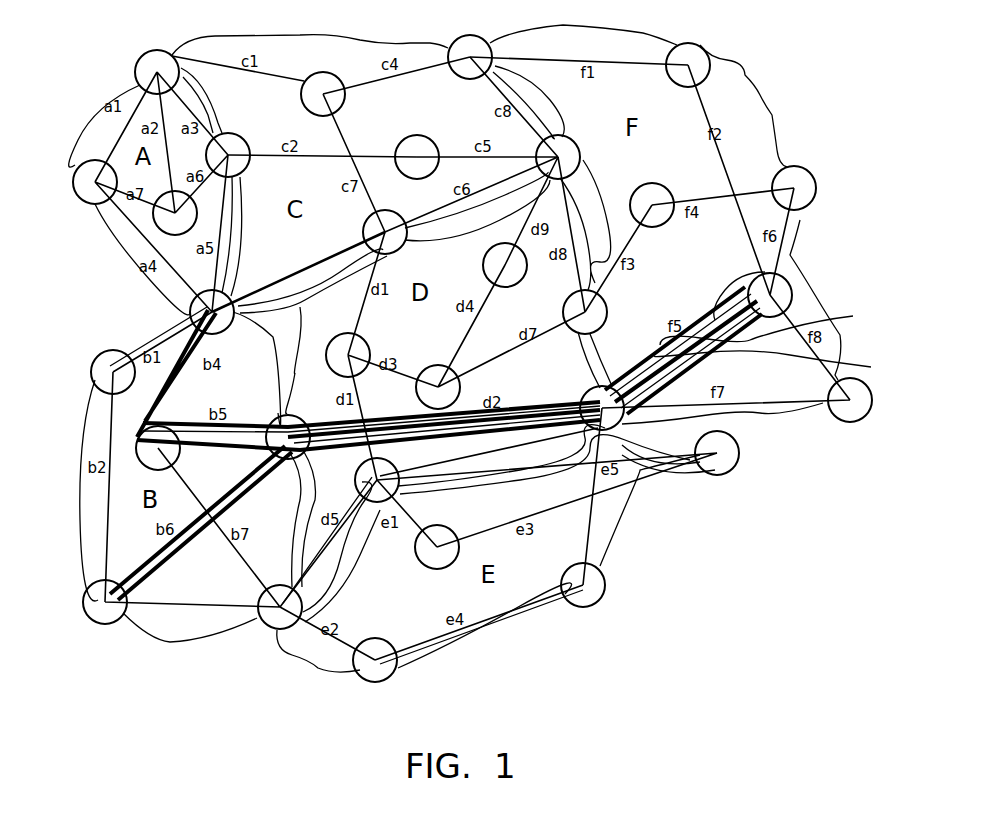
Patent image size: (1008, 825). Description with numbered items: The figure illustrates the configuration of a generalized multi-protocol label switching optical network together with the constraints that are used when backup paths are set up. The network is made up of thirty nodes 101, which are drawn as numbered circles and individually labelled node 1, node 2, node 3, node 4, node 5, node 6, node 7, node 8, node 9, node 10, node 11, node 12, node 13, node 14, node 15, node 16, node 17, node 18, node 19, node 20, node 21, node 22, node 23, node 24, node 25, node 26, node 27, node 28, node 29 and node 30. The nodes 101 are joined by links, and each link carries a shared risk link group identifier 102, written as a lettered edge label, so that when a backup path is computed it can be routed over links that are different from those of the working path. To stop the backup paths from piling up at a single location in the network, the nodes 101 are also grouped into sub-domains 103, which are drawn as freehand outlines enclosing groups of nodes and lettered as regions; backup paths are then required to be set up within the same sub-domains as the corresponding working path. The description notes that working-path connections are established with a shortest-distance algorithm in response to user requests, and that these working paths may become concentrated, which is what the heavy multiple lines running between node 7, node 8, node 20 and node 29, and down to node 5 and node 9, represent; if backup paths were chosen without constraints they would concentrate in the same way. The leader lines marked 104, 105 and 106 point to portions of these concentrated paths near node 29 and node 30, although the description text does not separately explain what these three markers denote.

The node 101 is at (148, 58).
The shared risk link group ID 102 is at (103, 147).
The sub-domain 103 is at (163, 293).
The path 104 is at (762, 275).
The path 105 is at (835, 318).
The path 106 is at (850, 364).
The node 1 is at (157, 72).
The node 2 is at (95, 182).
The node 3 is at (175, 213).
The node 4 is at (113, 372).
The node 5 is at (212, 312).
The node 6 is at (228, 155).
The node 7 is at (158, 448).
The node 8 is at (288, 437).
The node 9 is at (105, 602).
The node 10 is at (323, 94).
The node 11 is at (280, 607).
The node 12 is at (470, 57).
The node 13 is at (417, 157).
The node 14 is at (385, 232).
The node 15 is at (558, 157).
The node 16 is at (348, 355).
The node 17 is at (505, 265).
The node 18 is at (377, 480).
The node 19 is at (438, 387).
The node 20 is at (602, 408).
The node 21 is at (585, 312).
The node 22 is at (375, 660).
The node 23 is at (437, 547).
The node 24 is at (583, 585).
The node 25 is at (717, 453).
The node 26 is at (652, 205).
The node 27 is at (688, 65).
The node 28 is at (794, 188).
The node 29 is at (770, 295).
The node 30 is at (850, 400).